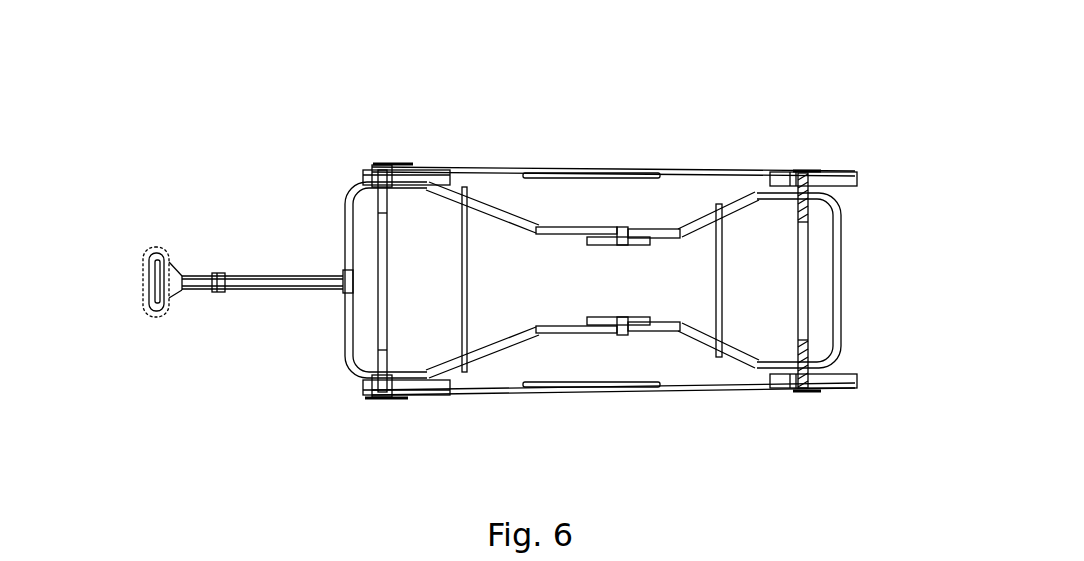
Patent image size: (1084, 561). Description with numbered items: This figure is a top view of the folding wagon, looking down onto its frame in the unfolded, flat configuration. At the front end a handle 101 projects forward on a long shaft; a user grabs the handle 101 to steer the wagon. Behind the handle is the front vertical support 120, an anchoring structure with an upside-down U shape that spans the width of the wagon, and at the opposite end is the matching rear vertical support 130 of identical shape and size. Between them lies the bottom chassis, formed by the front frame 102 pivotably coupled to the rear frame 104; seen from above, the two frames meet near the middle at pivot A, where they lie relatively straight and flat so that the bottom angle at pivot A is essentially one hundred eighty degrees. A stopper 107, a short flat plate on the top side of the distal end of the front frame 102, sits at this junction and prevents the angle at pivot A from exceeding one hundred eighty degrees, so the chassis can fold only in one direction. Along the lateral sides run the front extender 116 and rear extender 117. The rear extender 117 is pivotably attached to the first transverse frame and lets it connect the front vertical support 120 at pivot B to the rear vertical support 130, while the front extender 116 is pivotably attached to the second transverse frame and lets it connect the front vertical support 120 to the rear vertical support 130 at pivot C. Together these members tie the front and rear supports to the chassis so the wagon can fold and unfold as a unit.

The handle 101 is at (147, 300).
The front vertical support 120 is at (380, 243).
The front extender 116 is at (477, 167).
The rear extender 117 is at (737, 170).
The front frame 102 is at (552, 230).
The rear frame 104 is at (693, 227).
The stopper 107 is at (617, 245).
The rear vertical support 130 is at (803, 306).
The pivot A is at (600, 228).
The pivot B is at (382, 167).
The pivot C is at (800, 393).